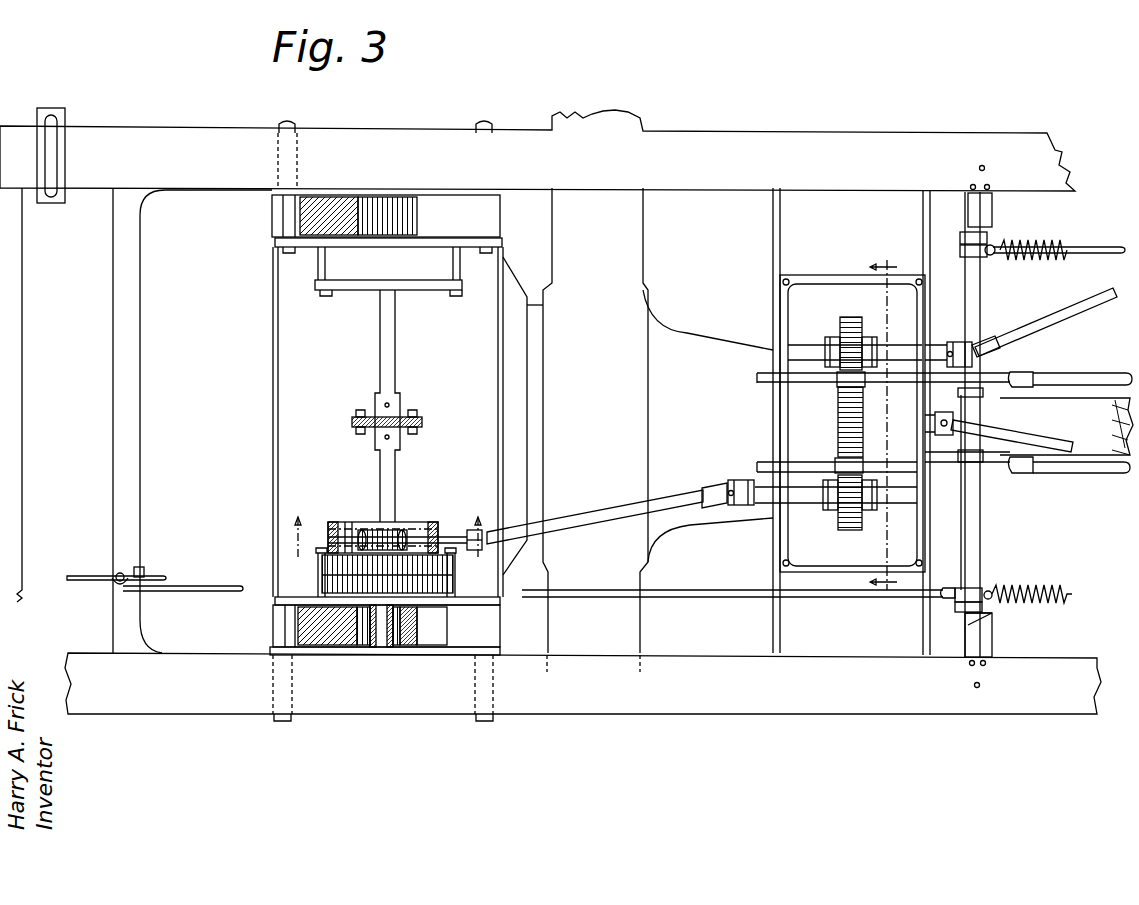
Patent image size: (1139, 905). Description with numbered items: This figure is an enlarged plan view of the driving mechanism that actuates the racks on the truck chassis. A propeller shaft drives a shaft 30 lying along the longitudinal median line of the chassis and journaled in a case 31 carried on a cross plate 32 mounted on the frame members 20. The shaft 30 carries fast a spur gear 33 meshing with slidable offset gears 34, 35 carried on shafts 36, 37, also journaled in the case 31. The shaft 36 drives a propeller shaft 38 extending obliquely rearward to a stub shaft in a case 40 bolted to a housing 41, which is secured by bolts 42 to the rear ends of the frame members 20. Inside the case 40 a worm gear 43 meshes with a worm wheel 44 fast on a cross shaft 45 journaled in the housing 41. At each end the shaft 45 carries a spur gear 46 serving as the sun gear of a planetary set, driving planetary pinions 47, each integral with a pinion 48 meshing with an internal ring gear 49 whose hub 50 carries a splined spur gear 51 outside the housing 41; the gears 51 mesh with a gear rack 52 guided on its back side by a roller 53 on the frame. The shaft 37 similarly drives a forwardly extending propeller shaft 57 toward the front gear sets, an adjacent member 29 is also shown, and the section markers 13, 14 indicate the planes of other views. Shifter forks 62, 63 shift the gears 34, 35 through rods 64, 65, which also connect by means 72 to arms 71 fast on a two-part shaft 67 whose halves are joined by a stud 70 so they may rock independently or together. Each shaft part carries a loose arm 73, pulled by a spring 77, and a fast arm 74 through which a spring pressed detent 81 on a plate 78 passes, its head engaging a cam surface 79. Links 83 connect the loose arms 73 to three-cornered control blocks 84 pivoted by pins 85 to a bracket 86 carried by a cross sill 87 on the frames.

The section line A-A 13 is at (384, 550).
The section line 14 is at (893, 426).
The frame members 20 is at (745, 137).
The rod 29 is at (1055, 447).
The shaft 30 is at (788, 430).
The case 31 is at (780, 312).
The cross plate 32 is at (790, 238).
The spur gear 33 is at (860, 540).
The slidable offset gear 34 is at (848, 530).
The slidable offset gear 35 is at (851, 317).
The shaft 36 is at (800, 493).
The shaft 37 is at (945, 340).
The propeller shaft 38 is at (598, 520).
The case 40 is at (415, 280).
The housing 41 is at (273, 352).
The bolts 42 is at (290, 122).
The worm gear 43 is at (420, 528).
The worm wheel 44 is at (400, 525).
The cross shaft 45 is at (396, 358).
The spur gear 46 is at (385, 648).
The planetary pinions 47 is at (335, 528).
The pinion 48 is at (362, 618).
The internal ring gear 49 is at (290, 610).
The hub 50 is at (440, 625).
The spur gear 51 is at (370, 215).
The gear rack 52 is at (320, 215).
The roller 53 is at (275, 205).
The propeller shaft 57 is at (1108, 300).
The shifter fork 62 is at (833, 465).
The shifter fork 63 is at (838, 382).
The rod 64 is at (1072, 477).
The rod 65 is at (1060, 375).
The two-part shaft 67 is at (982, 530).
The stud 70 is at (975, 433).
The arms 71 is at (983, 392).
The connecting means 72 is at (961, 460).
The loose arm 73 is at (990, 240).
The fast arm 74 is at (980, 232).
The spring 77 is at (1055, 262).
The plate 78 is at (985, 195).
The cam surface 79 is at (988, 238).
The spring pressed detent 81 is at (990, 215).
The link 83 is at (1102, 247).
The control block 84 is at (78, 575).
The pin 85 is at (122, 573).
The bracket 86 is at (145, 568).
The cross sill 87 is at (143, 318).